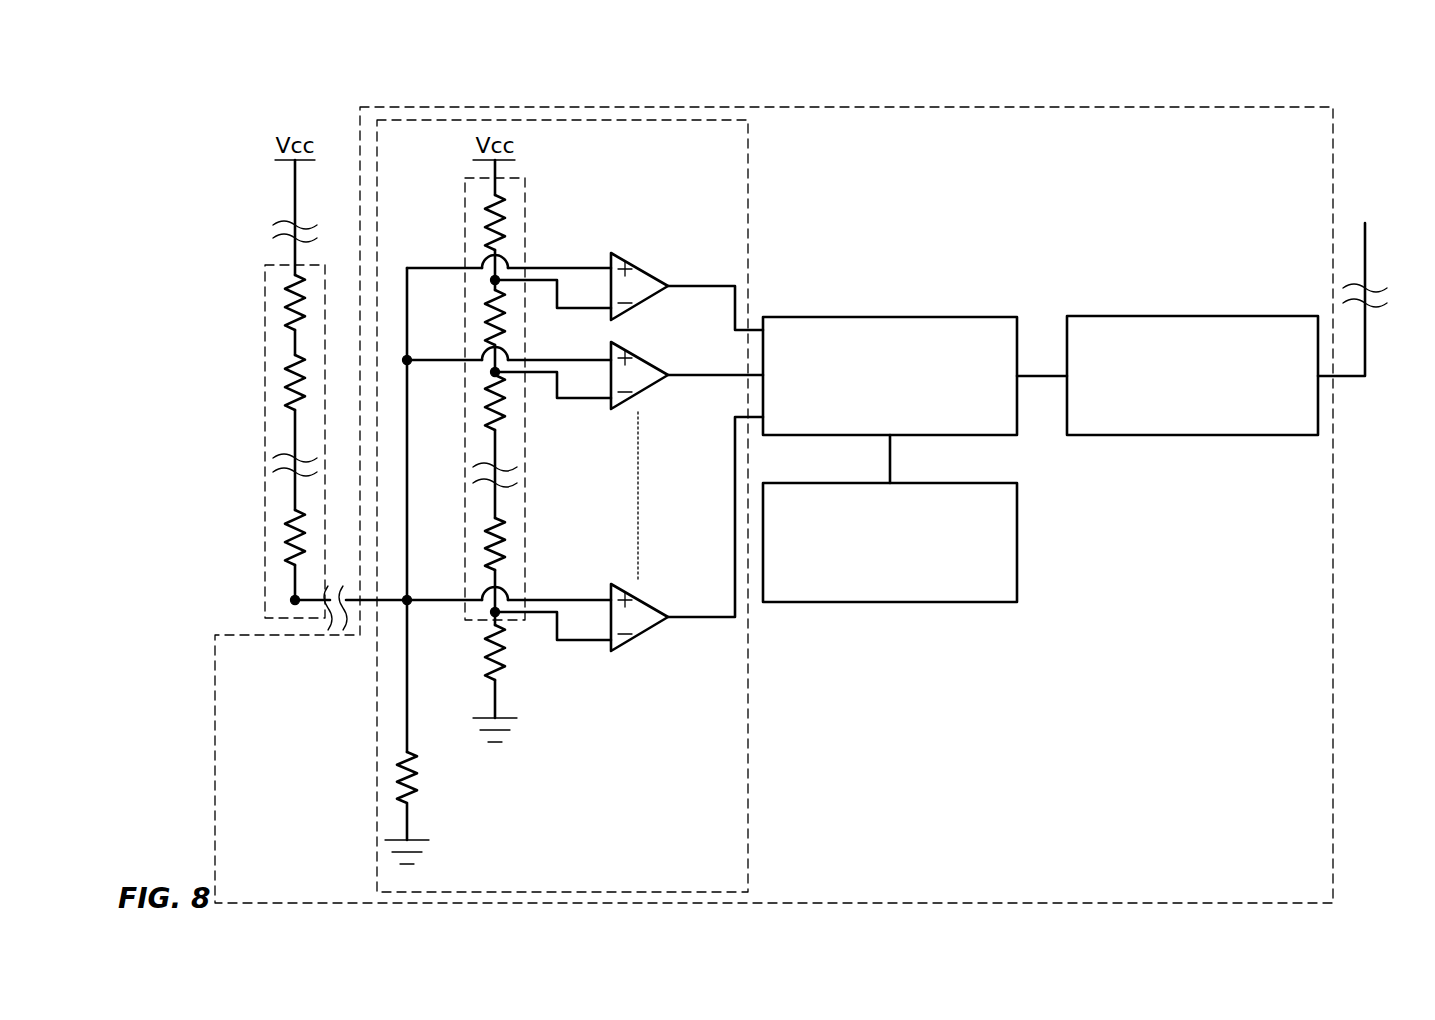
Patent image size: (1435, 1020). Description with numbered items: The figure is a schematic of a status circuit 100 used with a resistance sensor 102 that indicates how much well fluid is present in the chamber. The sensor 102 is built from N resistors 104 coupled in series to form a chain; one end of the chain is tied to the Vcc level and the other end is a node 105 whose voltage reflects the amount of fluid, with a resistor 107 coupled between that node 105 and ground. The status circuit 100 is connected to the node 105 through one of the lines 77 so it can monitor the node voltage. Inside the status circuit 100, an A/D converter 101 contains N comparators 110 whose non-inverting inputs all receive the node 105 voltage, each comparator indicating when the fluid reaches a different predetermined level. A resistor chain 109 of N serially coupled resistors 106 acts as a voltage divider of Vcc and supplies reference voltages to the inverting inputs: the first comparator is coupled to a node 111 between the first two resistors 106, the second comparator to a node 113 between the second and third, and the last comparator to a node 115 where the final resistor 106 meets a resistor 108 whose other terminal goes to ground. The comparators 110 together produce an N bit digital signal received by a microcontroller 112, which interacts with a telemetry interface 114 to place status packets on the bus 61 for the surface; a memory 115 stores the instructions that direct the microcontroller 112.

The bus 61 is at (1365, 258).
The lines 77 is at (295, 258).
The status circuit 100 is at (823, 107).
The A/D converter 101 is at (748, 216).
The resistance sensor 102 is at (265, 498).
The resistors 104 is at (292, 276).
The node 105 is at (290, 604).
The resistors 106 is at (504, 213).
The resistor 107 is at (417, 768).
The resistor 108 is at (507, 660).
The resistor chain 109 is at (465, 225).
The comparators 110 is at (622, 254).
The node 111 is at (493, 281).
The microcontroller 112 is at (885, 317).
The node 113 is at (493, 374).
The telemetry interface 114 is at (1190, 316).
The node / memory 115 is at (493, 614).